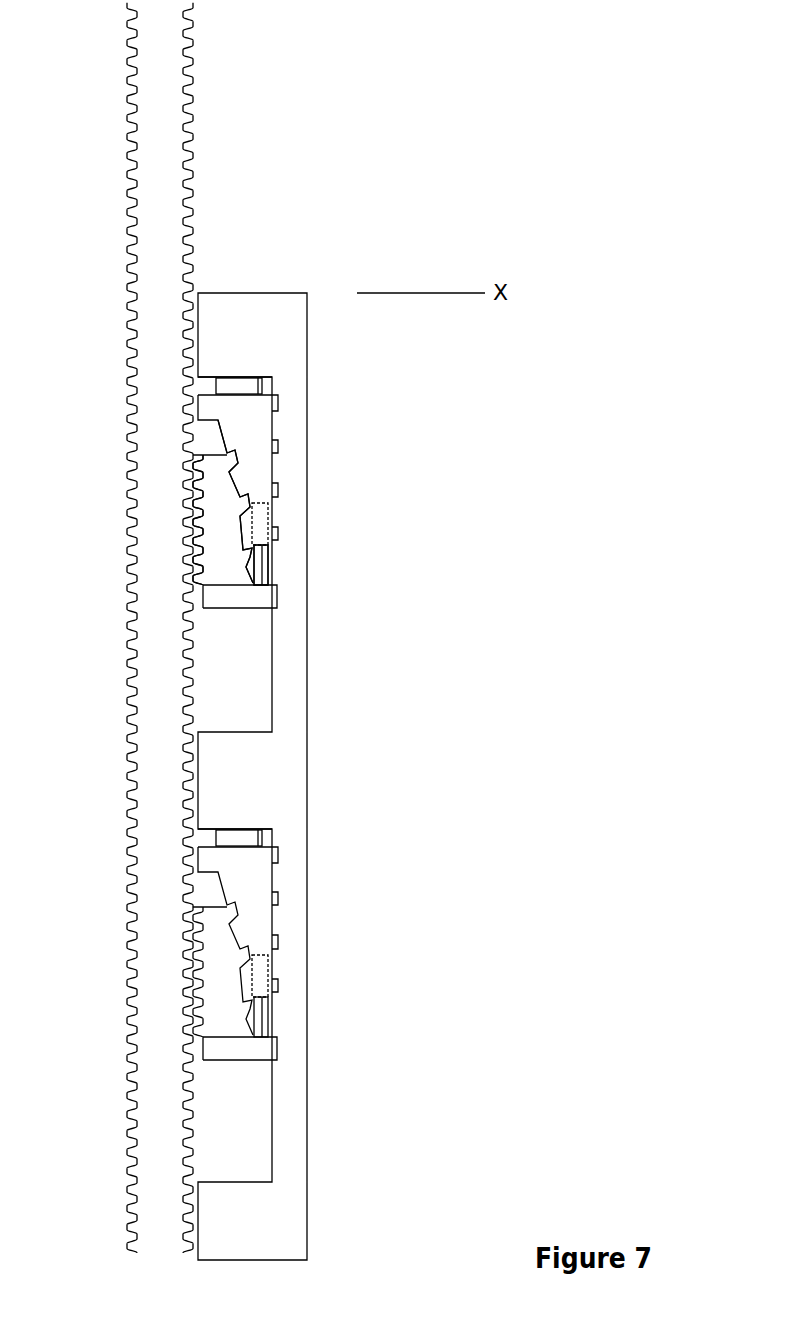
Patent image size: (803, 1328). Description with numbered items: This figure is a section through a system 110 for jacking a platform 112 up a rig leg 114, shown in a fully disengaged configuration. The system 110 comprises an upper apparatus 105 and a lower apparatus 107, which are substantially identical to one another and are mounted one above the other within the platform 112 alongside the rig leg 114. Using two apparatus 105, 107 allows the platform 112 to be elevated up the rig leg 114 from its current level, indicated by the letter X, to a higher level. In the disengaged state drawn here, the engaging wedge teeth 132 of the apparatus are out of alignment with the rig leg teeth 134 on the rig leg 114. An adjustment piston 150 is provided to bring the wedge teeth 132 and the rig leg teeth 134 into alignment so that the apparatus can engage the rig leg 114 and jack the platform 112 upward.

The upper apparatus 105 is at (214, 628).
The lower apparatus 107 is at (260, 873).
The system 110 is at (357, 227).
The platform 112 is at (307, 435).
The rig leg 114 is at (175, 150).
The engaging wedge teeth 132 is at (202, 508).
The rig leg teeth 134 is at (188, 510).
The adjustment piston 150 is at (262, 567).